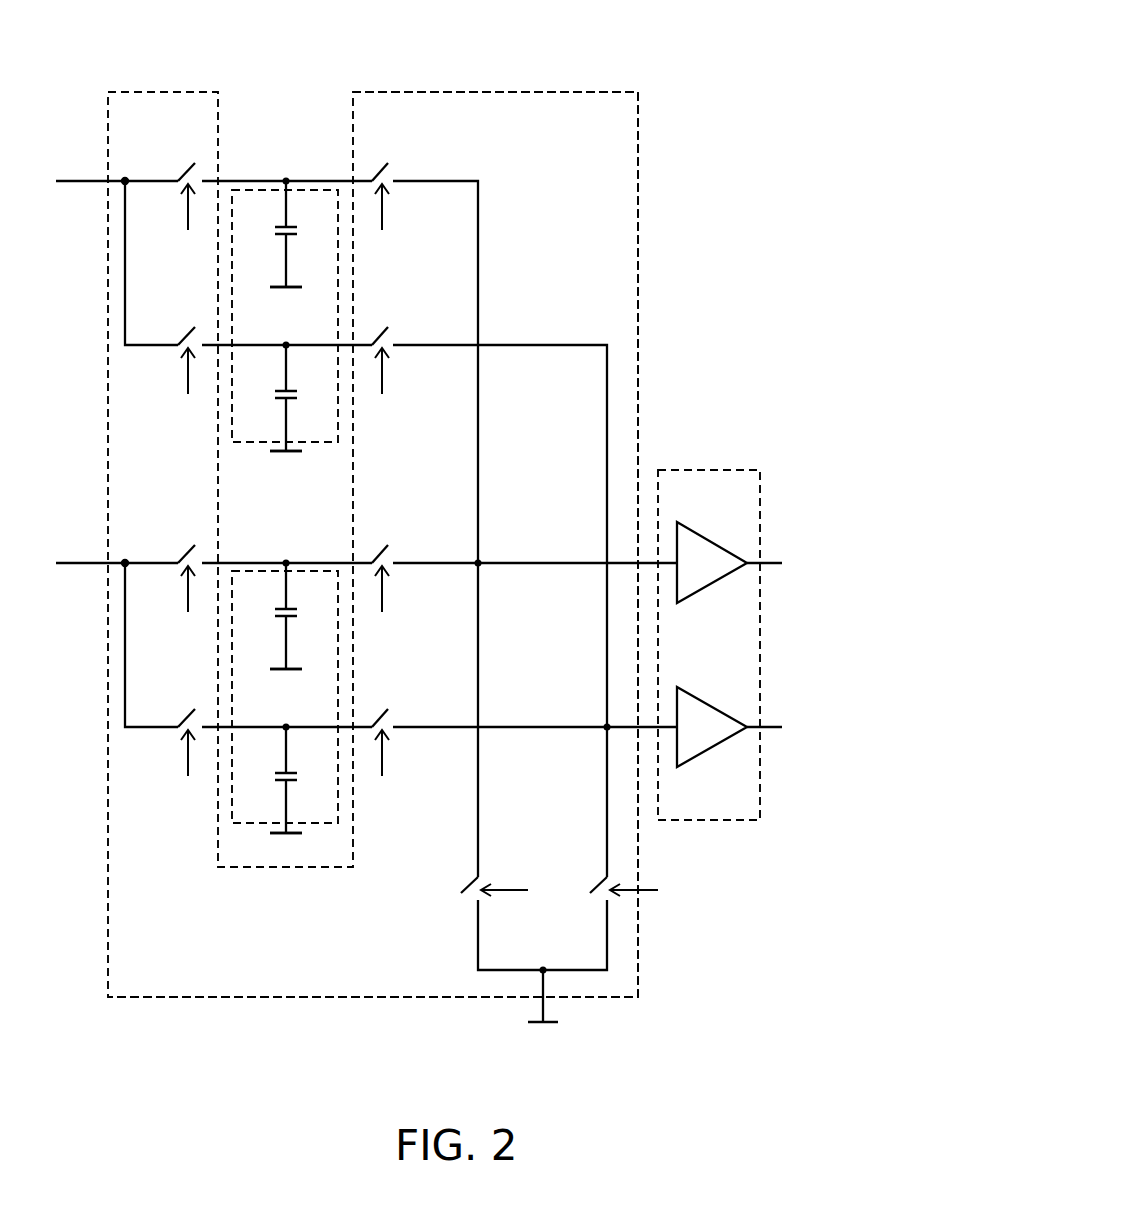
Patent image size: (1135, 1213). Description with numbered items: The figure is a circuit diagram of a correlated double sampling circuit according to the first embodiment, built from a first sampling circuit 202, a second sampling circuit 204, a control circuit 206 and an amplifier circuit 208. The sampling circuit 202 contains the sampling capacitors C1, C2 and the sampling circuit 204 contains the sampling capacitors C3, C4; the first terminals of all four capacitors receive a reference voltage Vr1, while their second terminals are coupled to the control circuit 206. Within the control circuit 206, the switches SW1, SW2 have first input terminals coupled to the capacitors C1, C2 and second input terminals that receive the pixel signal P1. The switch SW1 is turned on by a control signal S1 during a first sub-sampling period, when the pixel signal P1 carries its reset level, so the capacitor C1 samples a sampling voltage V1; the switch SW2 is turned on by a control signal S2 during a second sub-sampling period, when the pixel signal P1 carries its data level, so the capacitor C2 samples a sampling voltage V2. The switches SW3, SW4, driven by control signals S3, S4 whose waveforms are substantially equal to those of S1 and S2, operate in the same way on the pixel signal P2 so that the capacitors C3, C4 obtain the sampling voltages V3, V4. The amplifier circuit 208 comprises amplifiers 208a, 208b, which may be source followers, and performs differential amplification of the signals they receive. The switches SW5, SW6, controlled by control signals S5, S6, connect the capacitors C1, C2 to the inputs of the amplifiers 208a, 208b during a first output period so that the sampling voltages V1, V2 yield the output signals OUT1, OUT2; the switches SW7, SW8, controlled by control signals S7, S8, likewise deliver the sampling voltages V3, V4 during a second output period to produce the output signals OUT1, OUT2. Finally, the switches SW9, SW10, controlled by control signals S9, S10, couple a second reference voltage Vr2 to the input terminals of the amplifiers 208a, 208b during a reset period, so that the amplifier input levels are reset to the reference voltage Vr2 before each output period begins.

The sampling circuit 202 is at (315, 188).
The sampling circuit 204 is at (315, 569).
The control circuit 206 is at (638, 143).
The amplifier circuit 208 is at (703, 468).
The amplifier 208a is at (713, 583).
The amplifier 208b is at (713, 747).
The pixel signal P1 is at (116, 168).
The pixel signal P2 is at (116, 550).
The output signal OUT1 is at (800, 563).
The output signal OUT2 is at (800, 727).
The switch SW1 is at (184, 174).
The switch SW2 is at (184, 338).
The switch SW3 is at (184, 556).
The switch SW4 is at (184, 720).
The switch SW5 is at (385, 169).
The switch SW6 is at (385, 333).
The switch SW7 is at (385, 551).
The switch SW8 is at (385, 715).
The switch SW9 is at (472, 886).
The switch SW10 is at (600, 886).
The control signal S1 is at (188, 223).
The control signal S2 is at (188, 387).
The control signal S3 is at (188, 605).
The control signal S4 is at (188, 769).
The control signal S5 is at (382, 223).
The control signal S6 is at (382, 387).
The control signal S7 is at (382, 605).
The control signal S8 is at (382, 769).
The control signal S9 is at (522, 890).
The control signal S10 is at (659, 890).
The sampling capacitor C1 is at (298, 234).
The sampling capacitor C2 is at (298, 398).
The sampling capacitor C3 is at (298, 616).
The sampling capacitor C4 is at (298, 780).
The sampling voltage V1 is at (258, 233).
The sampling voltage V2 is at (258, 397).
The sampling voltage V3 is at (258, 615).
The sampling voltage V4 is at (258, 779).
The reference voltage Vr1 is at (285, 575).
The reference voltage Vr2 is at (542, 1011).